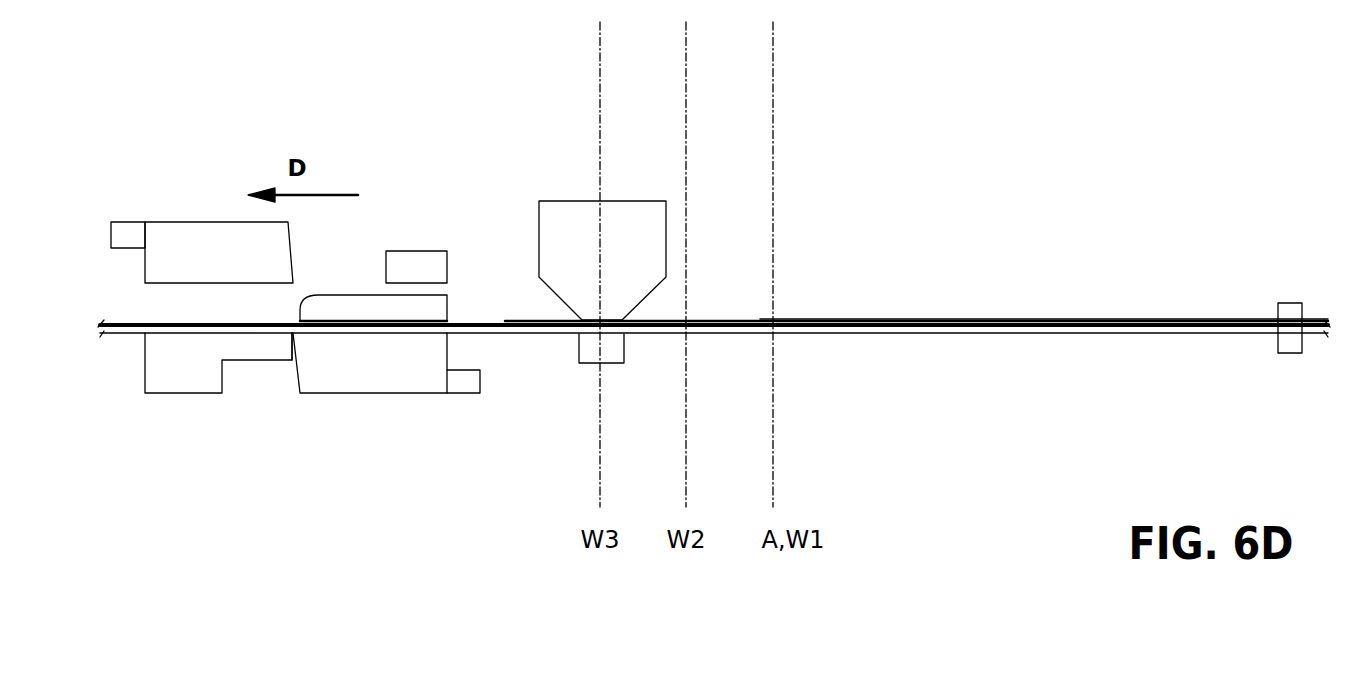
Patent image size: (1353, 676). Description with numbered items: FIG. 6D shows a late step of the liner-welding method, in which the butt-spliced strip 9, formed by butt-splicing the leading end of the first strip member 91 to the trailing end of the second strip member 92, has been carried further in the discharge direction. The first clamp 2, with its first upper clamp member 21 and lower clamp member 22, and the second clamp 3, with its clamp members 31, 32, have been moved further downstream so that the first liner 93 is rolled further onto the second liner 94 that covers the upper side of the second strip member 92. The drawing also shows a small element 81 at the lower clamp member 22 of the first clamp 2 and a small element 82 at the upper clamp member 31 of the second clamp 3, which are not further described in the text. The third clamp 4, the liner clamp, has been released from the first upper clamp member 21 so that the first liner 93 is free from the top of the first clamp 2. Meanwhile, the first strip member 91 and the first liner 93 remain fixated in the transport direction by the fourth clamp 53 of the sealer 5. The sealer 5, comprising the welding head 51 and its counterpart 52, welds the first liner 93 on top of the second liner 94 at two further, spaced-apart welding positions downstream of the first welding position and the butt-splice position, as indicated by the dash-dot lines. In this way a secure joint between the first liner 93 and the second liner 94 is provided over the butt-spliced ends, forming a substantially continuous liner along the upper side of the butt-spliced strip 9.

The first clamp 2 is at (394, 383).
The second clamp 3 is at (199, 330).
The third clamp 4 is at (410, 251).
The sealer 5 is at (647, 238).
The butt-spliced strip 9 is at (282, 334).
The first upper clamp member 21 is at (347, 310).
The clamp member of the first clamp 22 is at (413, 378).
The clamp member of the second clamp 31 is at (175, 230).
The clamp member of the second clamp 32 is at (172, 378).
The welding head 51 is at (653, 232).
The counterpart for the welding head 52 is at (616, 352).
The fourth clamp 53 is at (1296, 310).
The sensor 81 is at (468, 378).
The sensor 82 is at (130, 231).
The first strip member 91 is at (1196, 334).
The second strip member 92 is at (725, 335).
The first liner 93 is at (506, 320).
The second liner 94 is at (202, 323).